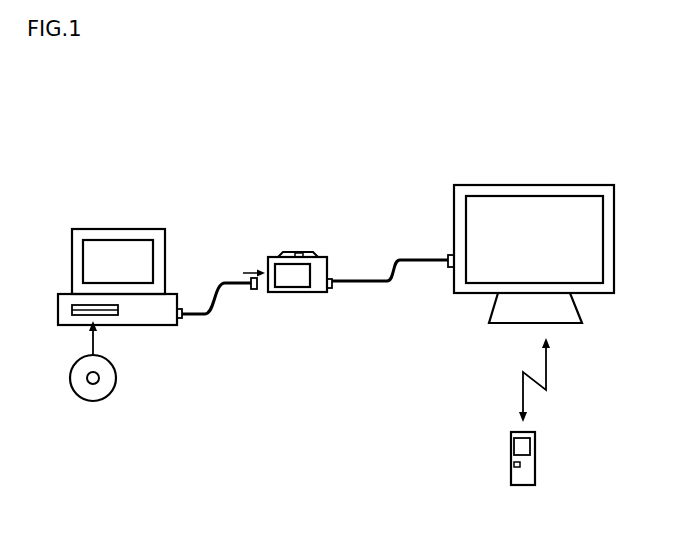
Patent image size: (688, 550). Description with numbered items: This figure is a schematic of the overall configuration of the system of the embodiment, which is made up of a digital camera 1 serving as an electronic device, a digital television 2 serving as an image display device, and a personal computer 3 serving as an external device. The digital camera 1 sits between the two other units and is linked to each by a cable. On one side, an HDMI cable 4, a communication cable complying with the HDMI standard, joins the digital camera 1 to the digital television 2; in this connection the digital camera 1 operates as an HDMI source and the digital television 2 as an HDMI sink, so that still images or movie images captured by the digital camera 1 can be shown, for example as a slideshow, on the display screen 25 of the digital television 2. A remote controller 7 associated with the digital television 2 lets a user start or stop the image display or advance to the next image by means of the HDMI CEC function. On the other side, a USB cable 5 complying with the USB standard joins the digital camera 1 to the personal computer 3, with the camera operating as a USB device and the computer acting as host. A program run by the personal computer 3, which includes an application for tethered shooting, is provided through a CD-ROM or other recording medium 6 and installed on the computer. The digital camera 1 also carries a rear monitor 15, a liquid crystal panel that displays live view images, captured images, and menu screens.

The digital camera 1 is at (300, 292).
The digital television 2 is at (454, 205).
The personal computer 3 is at (122, 232).
The HDMI cable 4 is at (372, 282).
The USB cable 5 is at (232, 280).
The recording medium 6 is at (117, 378).
The remote controller 7 is at (511, 463).
The rear monitor 15 is at (305, 273).
The display screen 25 is at (555, 207).